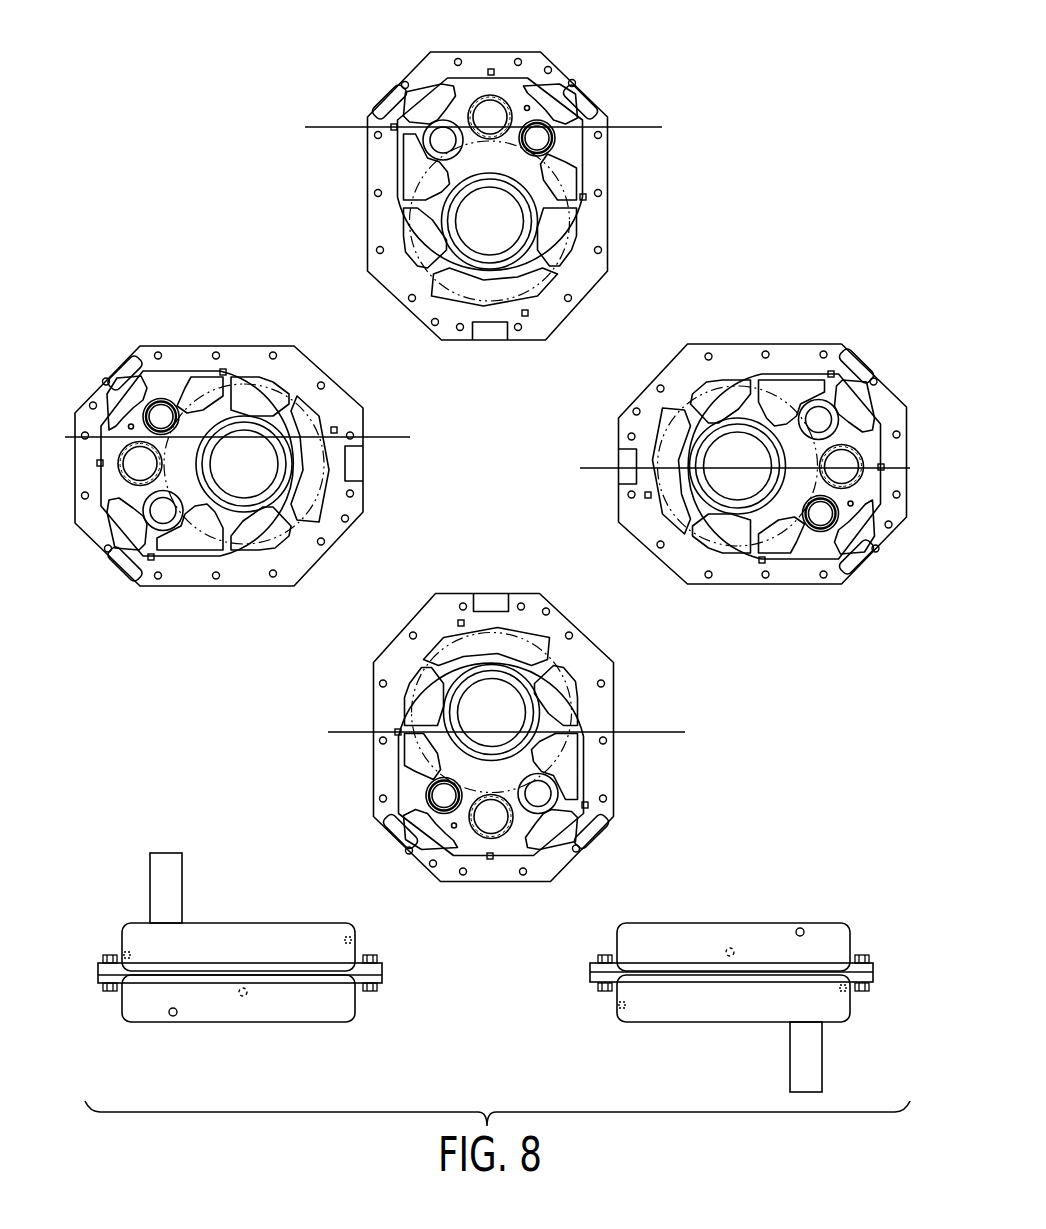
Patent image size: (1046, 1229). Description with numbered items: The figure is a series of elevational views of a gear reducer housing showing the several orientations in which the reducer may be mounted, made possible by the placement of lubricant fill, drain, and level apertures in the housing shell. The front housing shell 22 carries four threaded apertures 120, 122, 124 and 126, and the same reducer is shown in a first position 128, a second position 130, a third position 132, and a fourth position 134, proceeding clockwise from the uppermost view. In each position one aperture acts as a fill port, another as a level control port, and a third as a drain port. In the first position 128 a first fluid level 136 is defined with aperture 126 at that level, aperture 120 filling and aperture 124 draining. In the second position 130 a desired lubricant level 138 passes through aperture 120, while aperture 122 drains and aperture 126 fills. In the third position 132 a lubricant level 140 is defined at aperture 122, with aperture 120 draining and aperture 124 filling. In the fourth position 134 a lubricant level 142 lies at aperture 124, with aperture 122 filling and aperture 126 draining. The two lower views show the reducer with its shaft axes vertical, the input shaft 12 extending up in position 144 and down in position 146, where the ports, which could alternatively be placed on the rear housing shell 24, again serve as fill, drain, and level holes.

The input shaft 12 is at (163, 870).
The front housing half or shell 22 is at (491, 542).
The rear housing half or shell 24 is at (112, 1005).
The aperture 120 is at (494, 70).
The aperture 122 is at (586, 198).
The aperture 124 is at (525, 316).
The aperture 126 is at (393, 127).
The first position 128 is at (584, 198).
The second position 130 is at (682, 582).
The third position 132 is at (618, 803).
The fourth position 134 is at (270, 588).
The first fluid level 136 is at (343, 127).
The desired lubricant level 138 is at (602, 468).
The desired lubricant level 140 is at (635, 732).
The desired lubricant level 142 is at (388, 437).
The position with input shaft extending up 144 is at (223, 923).
The position with input shaft extending down 146 is at (808, 923).